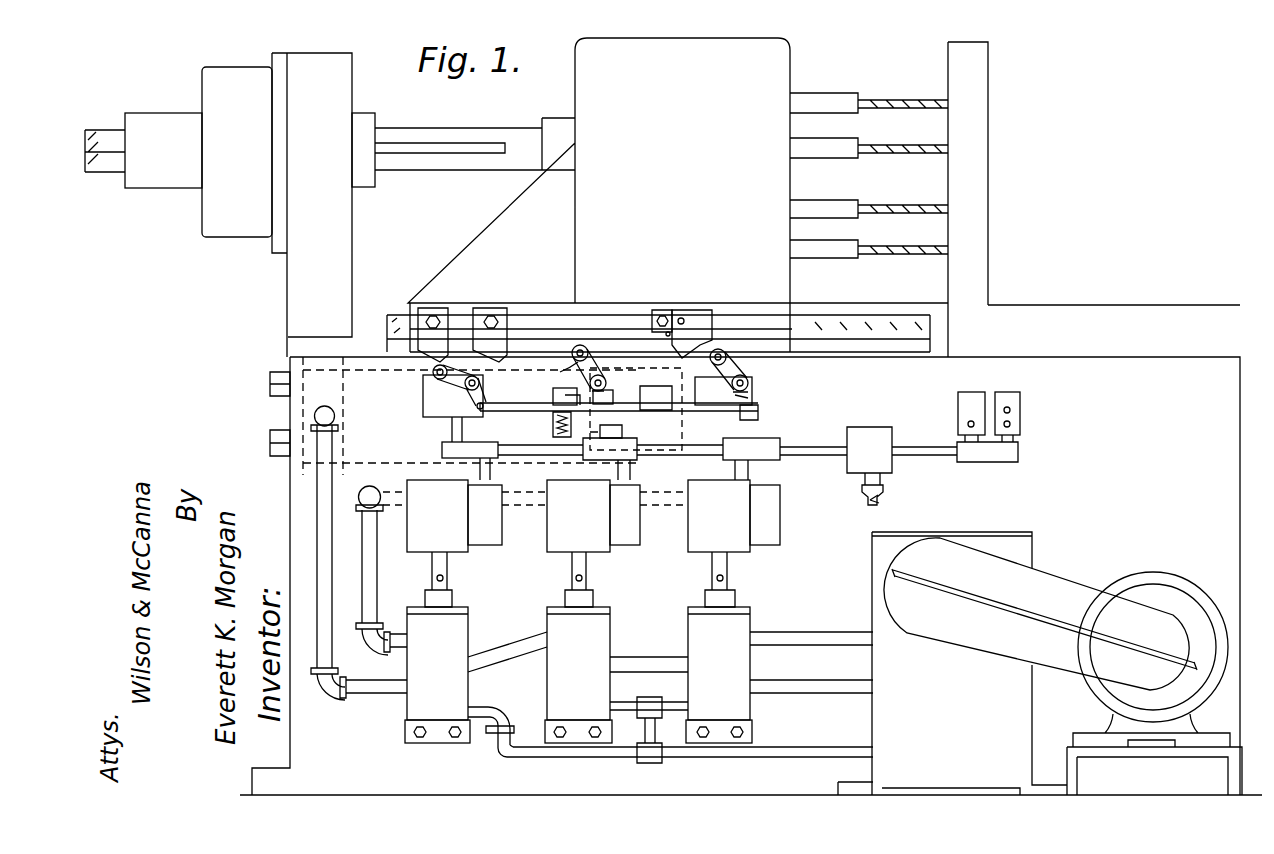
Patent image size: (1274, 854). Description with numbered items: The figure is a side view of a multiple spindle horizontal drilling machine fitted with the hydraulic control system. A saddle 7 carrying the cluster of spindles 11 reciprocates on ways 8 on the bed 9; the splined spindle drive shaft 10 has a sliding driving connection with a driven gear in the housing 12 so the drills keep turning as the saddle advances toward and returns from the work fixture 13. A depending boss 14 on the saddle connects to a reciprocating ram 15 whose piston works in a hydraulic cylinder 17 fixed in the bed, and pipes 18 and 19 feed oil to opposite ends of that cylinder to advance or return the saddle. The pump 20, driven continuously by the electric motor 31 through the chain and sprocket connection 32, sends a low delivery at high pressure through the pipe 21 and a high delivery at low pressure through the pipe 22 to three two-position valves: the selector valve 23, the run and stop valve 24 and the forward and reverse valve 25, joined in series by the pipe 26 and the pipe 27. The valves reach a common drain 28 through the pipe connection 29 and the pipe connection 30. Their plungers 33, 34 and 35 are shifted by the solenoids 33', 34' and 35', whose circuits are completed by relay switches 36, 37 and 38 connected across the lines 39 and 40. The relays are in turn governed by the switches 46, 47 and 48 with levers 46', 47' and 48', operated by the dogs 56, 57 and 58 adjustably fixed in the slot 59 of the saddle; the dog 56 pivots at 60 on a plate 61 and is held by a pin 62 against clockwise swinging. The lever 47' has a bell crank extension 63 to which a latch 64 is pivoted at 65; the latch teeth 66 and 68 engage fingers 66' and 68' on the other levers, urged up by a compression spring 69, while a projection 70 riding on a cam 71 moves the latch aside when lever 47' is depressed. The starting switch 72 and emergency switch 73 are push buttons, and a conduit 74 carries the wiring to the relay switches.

The saddle 7 is at (787, 74).
The ways 8 is at (860, 326).
The bed 9 is at (1222, 410).
The spindle drive shaft 10 is at (513, 138).
The cluster of spindles 11 is at (835, 100).
The housing 12 is at (318, 78).
The work fixture 13 is at (978, 55).
The depending boss 14 is at (656, 392).
The reciprocating ram 15 is at (645, 440).
The hydraulic cylinder 17 is at (357, 378).
The pipe 18 is at (322, 497).
The pipe 19 is at (372, 568).
The pump 20 is at (872, 580).
The pipe 21 is at (800, 640).
The pipe 22 is at (800, 690).
The selector valve 23 is at (740, 628).
The run and stop valve 24 is at (600, 630).
The forward and reverse valve 25 is at (462, 634).
The pipe 26 is at (646, 658).
The pipe 27 is at (497, 658).
The common drain 28 is at (790, 752).
The pipe connection 29 is at (640, 727).
The pipe connection 30 is at (492, 742).
The electric motor 31 is at (1165, 586).
The chain and sprocket connection 32 is at (1055, 582).
The plunger 33 is at (744, 579).
The solenoid 33' is at (719, 516).
The plunger 34 is at (603, 579).
The solenoid 34' is at (578, 516).
The plunger 35 is at (458, 579).
The solenoid 35' is at (437, 516).
The relay switch 36 is at (765, 515).
The relay switch 37 is at (625, 515).
The relay switch 38 is at (485, 515).
The line 39 is at (847, 508).
The line 40 is at (872, 500).
The switch 46 is at (756, 394).
The lever 46' is at (765, 370).
The switch 47 is at (422, 399).
The lever 47' is at (455, 417).
The switch 48 is at (615, 389).
The lever 48' is at (607, 368).
The dog 56 is at (692, 334).
The dog 57 is at (433, 335).
The dog 58 is at (490, 335).
The slot 59 is at (765, 322).
The pivot 60 is at (684, 318).
The plate 61 is at (662, 308).
The pin 62 is at (666, 336).
The bell crank extension 63 is at (480, 388).
The latch 64 is at (500, 413).
The pivot 65 is at (456, 424).
The tooth 66 is at (766, 447).
The finger 66' is at (777, 388).
The tooth 68 is at (615, 433).
The finger 68' is at (557, 362).
The compression spring 69 is at (555, 424).
The projection 70 is at (552, 400).
The cam 71 is at (562, 398).
The starting switch 72 is at (972, 392).
The emergency switch 73 is at (1011, 393).
The conduit 74 is at (820, 440).